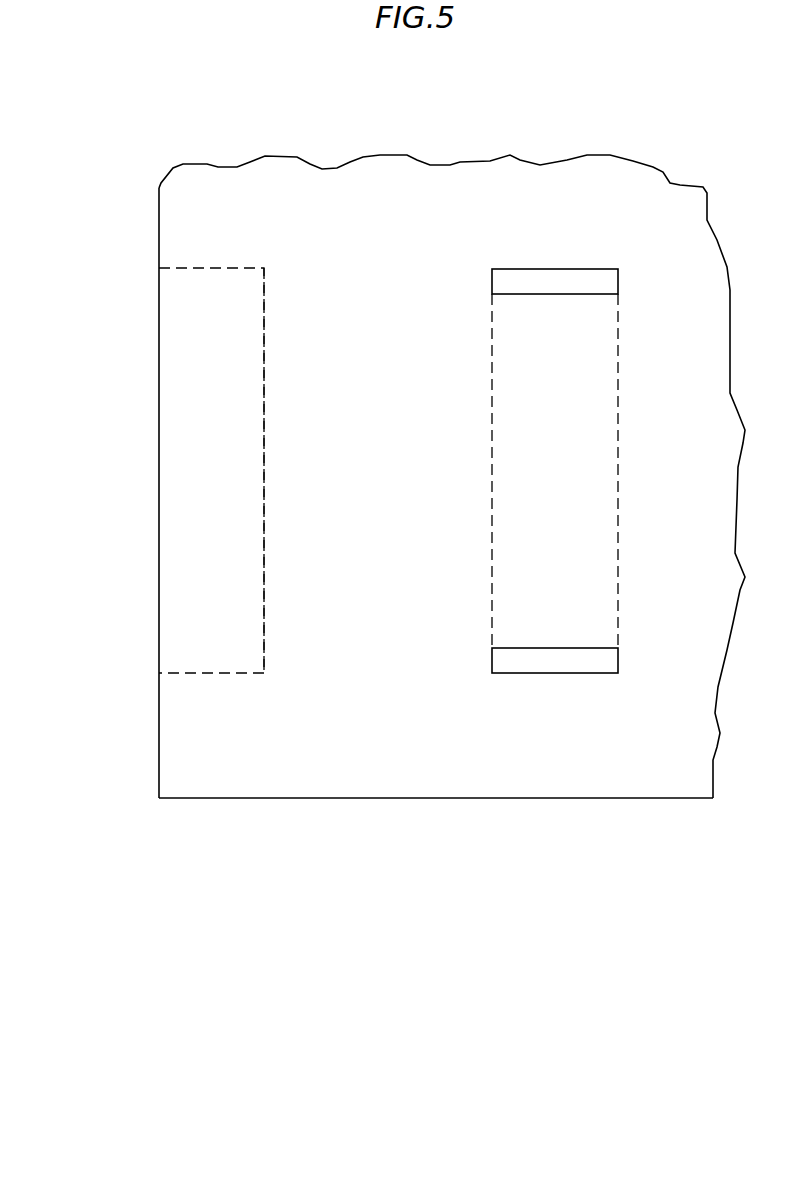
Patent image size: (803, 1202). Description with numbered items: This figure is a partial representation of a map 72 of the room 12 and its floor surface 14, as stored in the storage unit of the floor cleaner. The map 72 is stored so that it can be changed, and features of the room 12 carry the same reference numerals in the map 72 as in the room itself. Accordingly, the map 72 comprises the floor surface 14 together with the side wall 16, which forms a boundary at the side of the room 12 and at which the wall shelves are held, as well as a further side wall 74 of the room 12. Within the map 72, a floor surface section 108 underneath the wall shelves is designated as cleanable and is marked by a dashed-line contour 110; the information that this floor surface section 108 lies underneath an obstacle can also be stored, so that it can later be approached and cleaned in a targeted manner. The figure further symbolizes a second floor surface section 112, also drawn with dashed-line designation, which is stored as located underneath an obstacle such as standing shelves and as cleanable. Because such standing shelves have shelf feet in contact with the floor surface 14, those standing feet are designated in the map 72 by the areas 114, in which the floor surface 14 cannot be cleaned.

The room 12 is at (208, 832).
The floor surface 14 is at (408, 718).
The side wall 16 is at (159, 478).
The map 72 is at (289, 904).
The further side wall 74 is at (338, 798).
The floor surface section 108 is at (240, 495).
The dashed-line contour 110 is at (265, 393).
The floor surface section 112 is at (580, 448).
The standing feet areas 114 is at (558, 282).